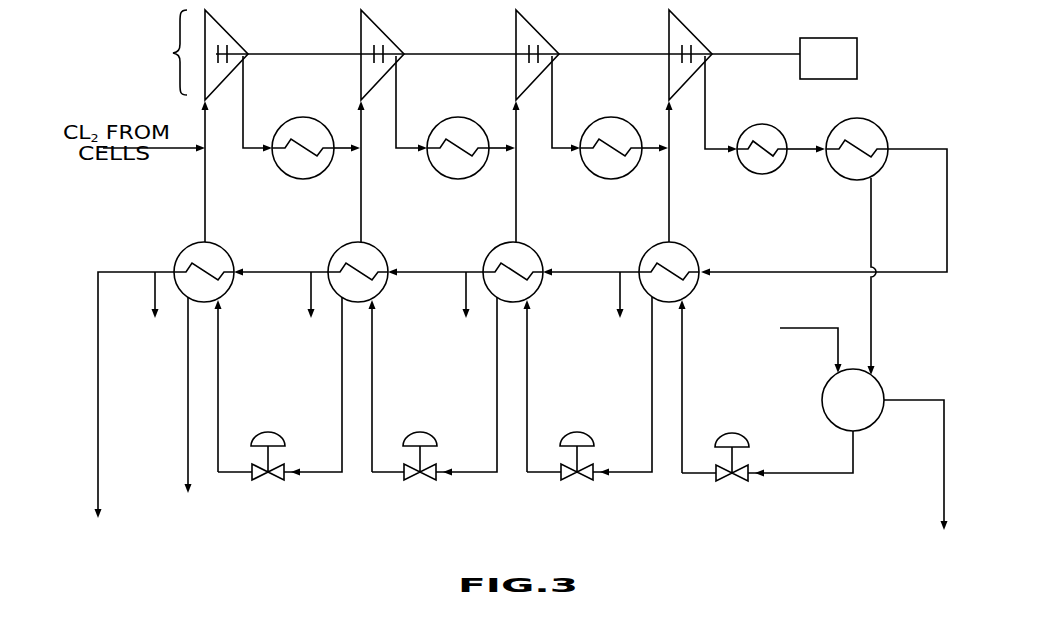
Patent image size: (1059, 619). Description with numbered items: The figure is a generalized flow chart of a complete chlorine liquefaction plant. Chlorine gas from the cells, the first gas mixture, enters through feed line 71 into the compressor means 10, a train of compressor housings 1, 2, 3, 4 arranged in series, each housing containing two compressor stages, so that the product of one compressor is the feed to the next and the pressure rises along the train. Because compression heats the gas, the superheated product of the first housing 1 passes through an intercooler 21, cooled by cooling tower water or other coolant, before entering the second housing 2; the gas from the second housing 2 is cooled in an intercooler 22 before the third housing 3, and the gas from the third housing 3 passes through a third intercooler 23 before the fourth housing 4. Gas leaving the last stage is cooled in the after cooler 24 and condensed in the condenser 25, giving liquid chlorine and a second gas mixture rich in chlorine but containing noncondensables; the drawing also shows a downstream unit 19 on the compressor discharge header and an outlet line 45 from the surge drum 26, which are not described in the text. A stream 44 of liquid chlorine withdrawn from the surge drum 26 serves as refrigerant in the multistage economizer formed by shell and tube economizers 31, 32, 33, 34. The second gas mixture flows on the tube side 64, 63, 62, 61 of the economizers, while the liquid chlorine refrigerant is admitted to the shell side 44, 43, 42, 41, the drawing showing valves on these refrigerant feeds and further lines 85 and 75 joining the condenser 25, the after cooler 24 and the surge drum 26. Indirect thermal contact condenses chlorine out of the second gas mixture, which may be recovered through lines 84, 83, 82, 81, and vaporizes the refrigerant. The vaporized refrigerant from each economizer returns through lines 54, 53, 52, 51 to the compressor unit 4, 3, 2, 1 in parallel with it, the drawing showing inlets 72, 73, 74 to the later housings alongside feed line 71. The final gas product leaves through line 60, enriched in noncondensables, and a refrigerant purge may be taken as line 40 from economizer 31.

The first compressor housing 1 is at (231, 17).
The second compressor housing 2 is at (386, 17).
The third compressor housing 3 is at (541, 17).
The fourth compressor housing 4 is at (694, 17).
The compressor means 10 is at (163, 50).
The chlorine receiver / consumer 19 is at (858, 58).
The intercooler 21 is at (307, 117).
The intercooler 22 is at (458, 117).
The third intercooler 23 is at (609, 117).
The after cooler 24 is at (773, 127).
The condenser 25 is at (877, 125).
The surge drum 26 is at (877, 380).
The economizer 31 is at (217, 244).
The economizer 32 is at (371, 245).
The economizer 33 is at (526, 245).
The economizer 34 is at (685, 247).
The refrigerant purge line 40 is at (186, 364).
The shell side 41 is at (318, 474).
The shell side 42 is at (470, 474).
The shell side 43 is at (627, 474).
The liquid chlorine stream 44 is at (811, 476).
The liquid outlet line from separator 45 is at (944, 490).
The line 51 is at (206, 192).
The line 52 is at (362, 192).
The line 53 is at (517, 192).
The line 54 is at (670, 192).
The final gas product line 60 is at (138, 270).
The tube side 61 is at (296, 270).
The tube side 62 is at (455, 270).
The tube side 63 is at (608, 272).
The tube side 64 is at (800, 272).
The feed line 71 is at (185, 147).
The inlet conduit to compressor stage 2 72 is at (344, 147).
The inlet conduit to compressor stage 3 73 is at (492, 147).
The inlet conduit to compressor stage 4 74 is at (649, 147).
The conduit between coolers 24 and 25 75 is at (803, 153).
The condensed chlorine line 81 is at (151, 298).
The condensed chlorine line 82 is at (306, 299).
The condensed chlorine line 83 is at (462, 298).
The condensed chlorine line 84 is at (616, 298).
The conduit from cooler 25 to separator 26 85 is at (870, 303).